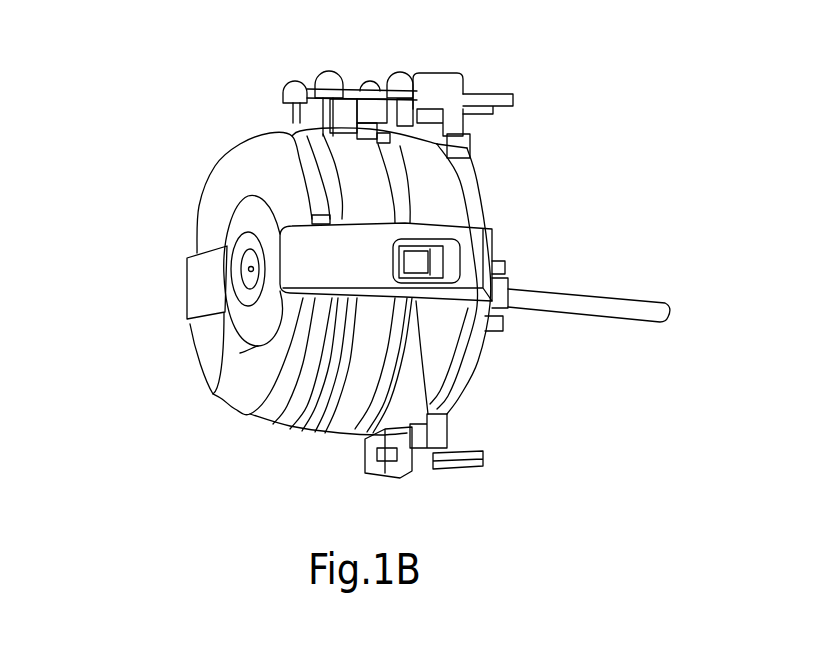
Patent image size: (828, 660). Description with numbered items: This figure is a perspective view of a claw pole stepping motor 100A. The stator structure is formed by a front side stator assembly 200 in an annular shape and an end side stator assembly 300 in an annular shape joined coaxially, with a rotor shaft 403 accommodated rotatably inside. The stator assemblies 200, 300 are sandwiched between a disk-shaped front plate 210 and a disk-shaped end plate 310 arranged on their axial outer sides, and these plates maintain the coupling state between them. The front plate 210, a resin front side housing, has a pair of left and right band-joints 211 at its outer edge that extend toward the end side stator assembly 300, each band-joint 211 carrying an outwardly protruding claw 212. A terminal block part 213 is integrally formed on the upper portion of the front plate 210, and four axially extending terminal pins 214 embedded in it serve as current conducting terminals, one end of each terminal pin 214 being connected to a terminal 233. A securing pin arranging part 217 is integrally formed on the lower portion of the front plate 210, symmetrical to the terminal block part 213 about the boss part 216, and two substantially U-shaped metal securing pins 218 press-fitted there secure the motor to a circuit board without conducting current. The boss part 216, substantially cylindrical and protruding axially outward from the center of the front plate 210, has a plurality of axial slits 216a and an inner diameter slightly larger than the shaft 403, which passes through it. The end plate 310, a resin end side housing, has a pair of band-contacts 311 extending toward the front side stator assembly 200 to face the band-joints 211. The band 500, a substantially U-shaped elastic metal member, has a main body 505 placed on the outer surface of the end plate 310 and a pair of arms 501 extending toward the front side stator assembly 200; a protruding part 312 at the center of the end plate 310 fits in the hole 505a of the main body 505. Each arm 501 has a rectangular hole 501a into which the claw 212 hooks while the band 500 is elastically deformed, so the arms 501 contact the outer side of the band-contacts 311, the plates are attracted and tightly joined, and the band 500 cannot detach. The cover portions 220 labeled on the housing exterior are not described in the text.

The stepping motor 100A is at (135, 130).
The front side stator assembly 200 is at (432, 352).
The front plate 210 is at (468, 352).
The band-joint 211 is at (475, 258).
The claw 212 is at (440, 252).
The terminal block part 213 is at (443, 72).
The terminal pin 214 is at (490, 97).
The boss part 216 is at (505, 290).
The slit 216a is at (505, 315).
The securing pin arranging part 217 is at (448, 437).
The securing pin 218 is at (483, 457).
The cover portion 220 is at (357, 173).
The terminal 233 is at (317, 108).
The end side stator assembly 300 is at (317, 403).
The end plate 310 is at (232, 193).
The band-contact 311 is at (363, 410).
The protruding part 312 is at (245, 352).
The shaft 403 is at (640, 310).
The band 500 is at (195, 275).
The arm 501 is at (317, 418).
The rectangular hole 501a is at (433, 413).
The main body 505 is at (205, 302).
The hole 505a is at (230, 250).